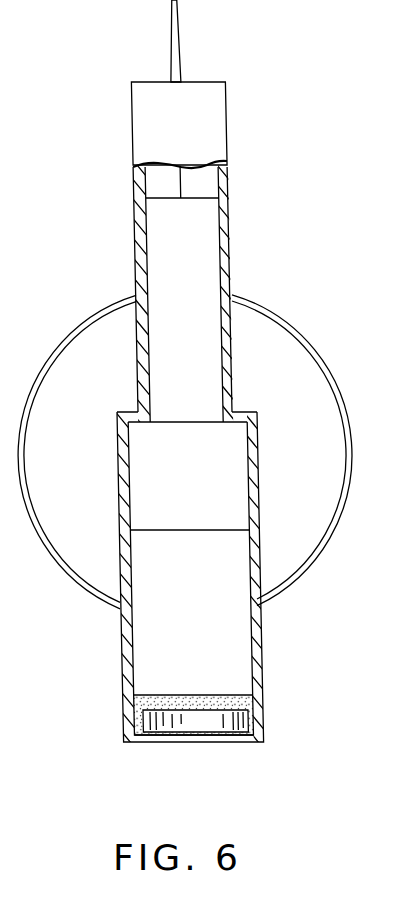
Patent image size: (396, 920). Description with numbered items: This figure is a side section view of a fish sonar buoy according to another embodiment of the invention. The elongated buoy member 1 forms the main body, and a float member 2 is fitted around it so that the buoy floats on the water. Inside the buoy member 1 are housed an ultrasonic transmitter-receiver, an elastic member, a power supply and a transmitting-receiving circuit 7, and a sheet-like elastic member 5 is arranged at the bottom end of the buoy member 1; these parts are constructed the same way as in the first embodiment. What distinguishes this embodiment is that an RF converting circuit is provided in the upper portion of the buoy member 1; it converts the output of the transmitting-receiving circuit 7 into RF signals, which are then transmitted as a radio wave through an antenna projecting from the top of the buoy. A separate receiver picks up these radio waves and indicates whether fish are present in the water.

The buoy member 1 is at (267, 636).
The float member 2 is at (305, 337).
The sheet-like elastic member 5 is at (175, 738).
The transmitting-receiving circuit 7 is at (223, 475).